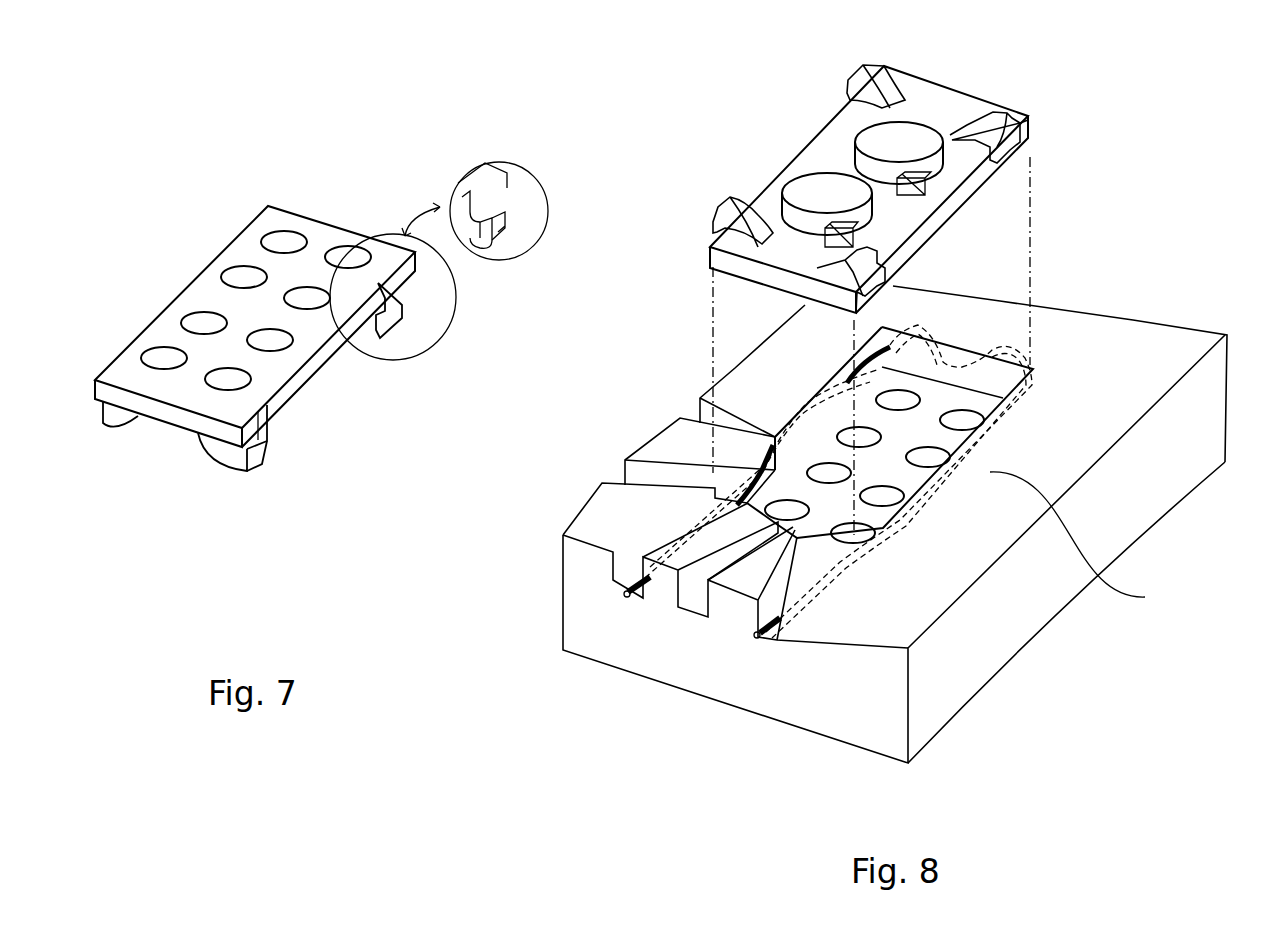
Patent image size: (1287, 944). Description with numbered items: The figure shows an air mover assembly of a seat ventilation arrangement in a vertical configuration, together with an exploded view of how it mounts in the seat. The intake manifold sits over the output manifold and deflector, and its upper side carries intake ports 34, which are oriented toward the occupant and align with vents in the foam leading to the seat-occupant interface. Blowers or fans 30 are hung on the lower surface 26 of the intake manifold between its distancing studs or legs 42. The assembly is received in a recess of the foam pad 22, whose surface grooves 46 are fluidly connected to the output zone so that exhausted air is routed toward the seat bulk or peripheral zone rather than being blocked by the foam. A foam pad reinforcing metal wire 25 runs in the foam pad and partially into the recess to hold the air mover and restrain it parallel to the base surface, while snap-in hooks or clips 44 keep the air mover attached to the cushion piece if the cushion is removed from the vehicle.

In FIG. 8, the foam pad 22 is at (1073, 333).
In FIG. 8, the foam pad reinforcing metal wire 25 is at (1082, 541).
In FIG. 7, the lower surface of the intake manifold 26 is at (287, 387).
In FIG. 8, the lower surface of the intake manifold 26 is at (905, 82).
In FIG. 8, the blowers or fans 30 is at (903, 140).
In FIG. 7, the intake ports 34 is at (235, 275).
In FIG. 7, the distancing studs or legs 42 is at (249, 471).
In FIG. 8, the distancing studs or legs 42 is at (717, 210).
In FIG. 7, the snap-in hooks or clips 44 is at (513, 222).
In FIG. 8, the grooves 46 is at (688, 587).